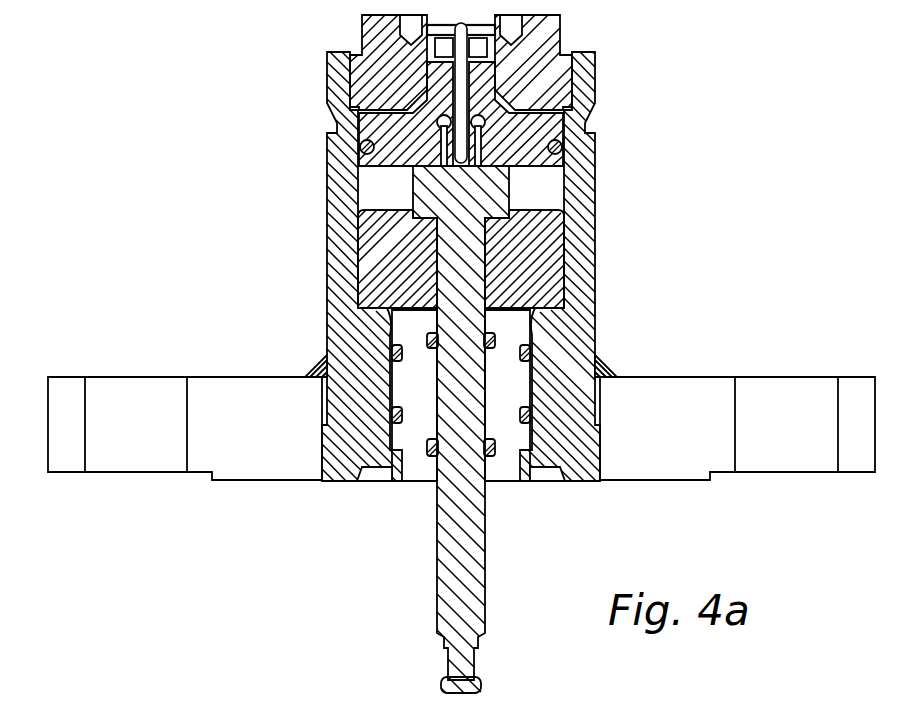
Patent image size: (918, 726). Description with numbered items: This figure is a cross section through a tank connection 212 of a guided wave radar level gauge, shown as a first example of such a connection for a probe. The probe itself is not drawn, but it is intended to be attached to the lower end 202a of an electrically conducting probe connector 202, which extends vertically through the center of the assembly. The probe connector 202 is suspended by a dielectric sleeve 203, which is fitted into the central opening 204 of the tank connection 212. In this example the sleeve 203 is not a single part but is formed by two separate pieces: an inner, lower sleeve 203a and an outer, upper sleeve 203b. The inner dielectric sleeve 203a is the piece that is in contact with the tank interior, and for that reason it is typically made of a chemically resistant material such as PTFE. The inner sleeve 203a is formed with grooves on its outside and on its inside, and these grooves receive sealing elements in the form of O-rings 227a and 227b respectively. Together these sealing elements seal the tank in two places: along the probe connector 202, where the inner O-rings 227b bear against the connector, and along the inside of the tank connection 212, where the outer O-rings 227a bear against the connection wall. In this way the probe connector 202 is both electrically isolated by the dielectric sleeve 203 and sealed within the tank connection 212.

The probe connector 202 is at (485, 552).
The lower end of probe connector 202a is at (480, 682).
The dielectric sleeve 203 is at (372, 238).
The inner sleeve 203a is at (415, 478).
The outer sleeve 203b is at (533, 247).
The central opening 204 is at (555, 188).
The tank connection 212 is at (573, 336).
The O-ring 227a is at (388, 358).
The O-ring 227b is at (497, 455).